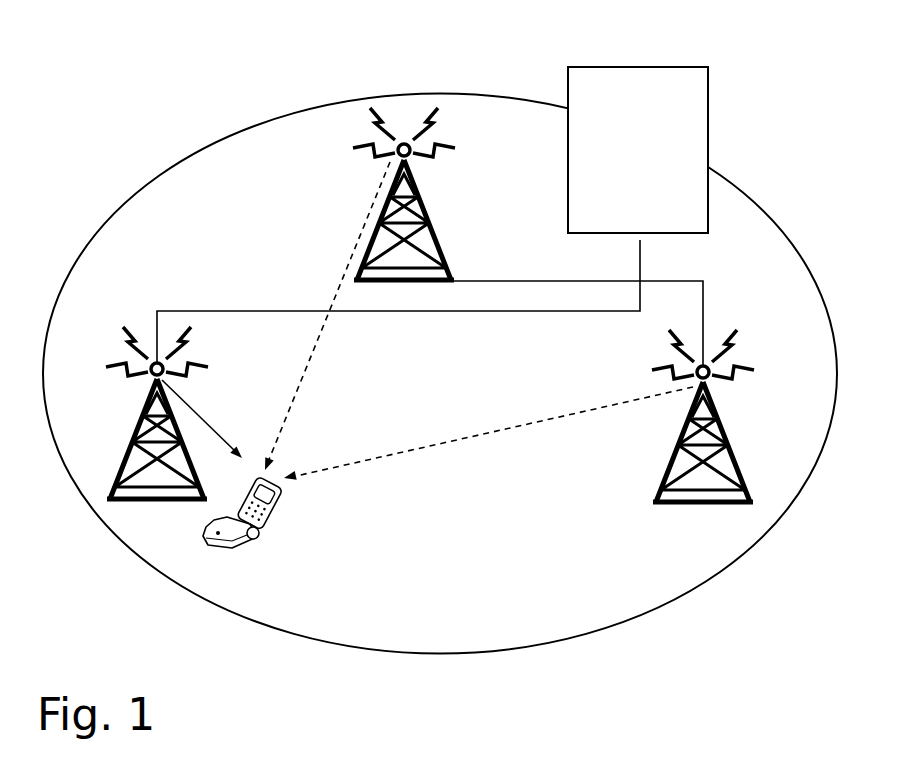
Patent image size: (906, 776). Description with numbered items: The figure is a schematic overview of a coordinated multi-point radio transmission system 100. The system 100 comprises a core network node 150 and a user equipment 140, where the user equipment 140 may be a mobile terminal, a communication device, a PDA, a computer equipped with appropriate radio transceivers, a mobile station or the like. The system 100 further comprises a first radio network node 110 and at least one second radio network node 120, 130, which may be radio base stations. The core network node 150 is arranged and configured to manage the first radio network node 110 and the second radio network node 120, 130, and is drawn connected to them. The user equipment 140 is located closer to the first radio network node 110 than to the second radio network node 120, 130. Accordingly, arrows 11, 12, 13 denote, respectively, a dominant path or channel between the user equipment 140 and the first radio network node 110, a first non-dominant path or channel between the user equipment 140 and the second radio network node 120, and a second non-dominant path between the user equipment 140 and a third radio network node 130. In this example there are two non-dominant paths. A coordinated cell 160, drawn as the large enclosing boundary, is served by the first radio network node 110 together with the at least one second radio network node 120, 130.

The coordinated multi-point radio transmission system 100 is at (260, 61).
The first radio network node 110 is at (140, 413).
The second radio network node 120 is at (413, 194).
The third radio network node 130 is at (721, 416).
The user equipment 140 is at (250, 530).
The core network node 150 is at (432, 216).
The coordinated cell 160 is at (663, 602).
The dominant path 11 is at (202, 419).
The first non-dominant path 12 is at (327, 316).
The second non-dominant path 13 is at (488, 433).